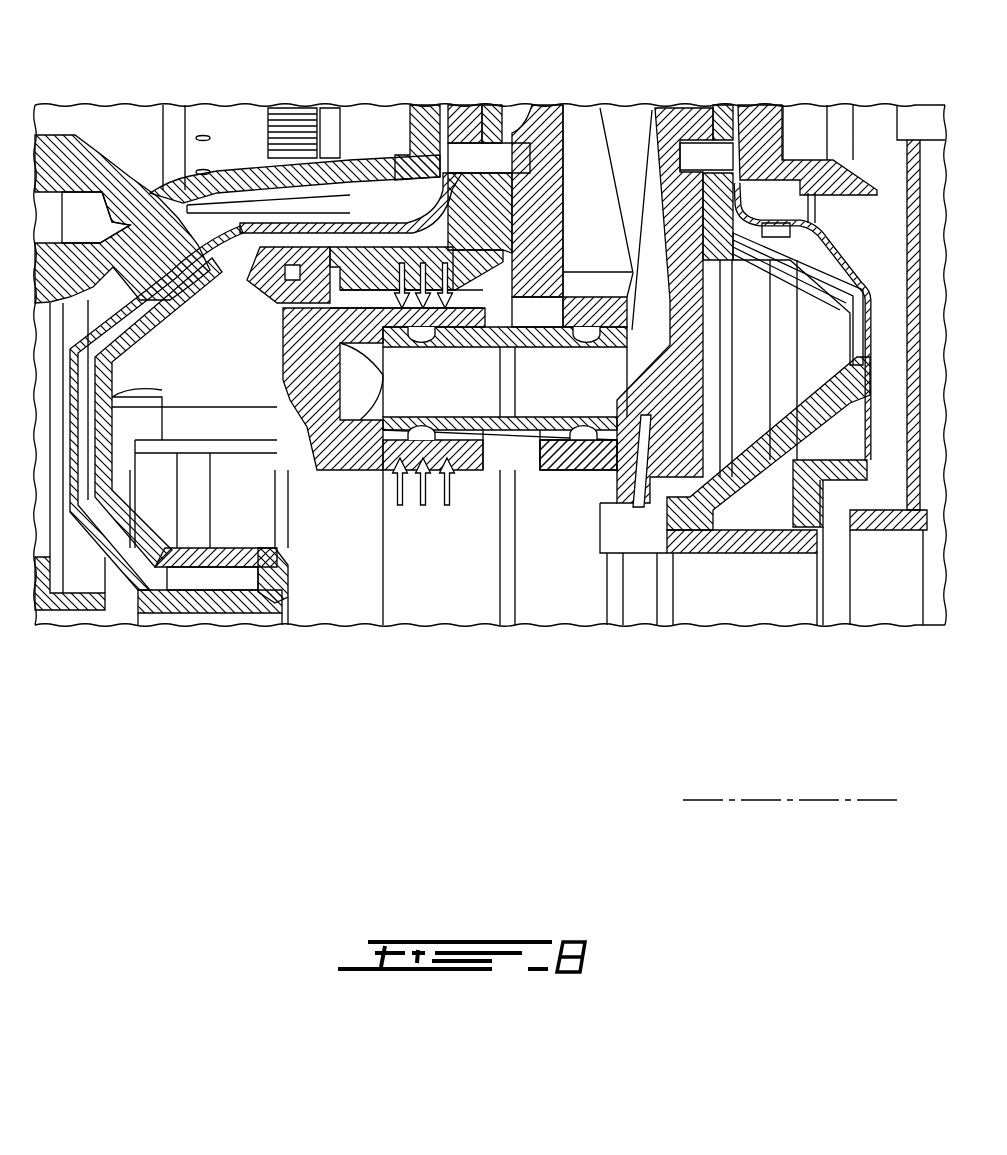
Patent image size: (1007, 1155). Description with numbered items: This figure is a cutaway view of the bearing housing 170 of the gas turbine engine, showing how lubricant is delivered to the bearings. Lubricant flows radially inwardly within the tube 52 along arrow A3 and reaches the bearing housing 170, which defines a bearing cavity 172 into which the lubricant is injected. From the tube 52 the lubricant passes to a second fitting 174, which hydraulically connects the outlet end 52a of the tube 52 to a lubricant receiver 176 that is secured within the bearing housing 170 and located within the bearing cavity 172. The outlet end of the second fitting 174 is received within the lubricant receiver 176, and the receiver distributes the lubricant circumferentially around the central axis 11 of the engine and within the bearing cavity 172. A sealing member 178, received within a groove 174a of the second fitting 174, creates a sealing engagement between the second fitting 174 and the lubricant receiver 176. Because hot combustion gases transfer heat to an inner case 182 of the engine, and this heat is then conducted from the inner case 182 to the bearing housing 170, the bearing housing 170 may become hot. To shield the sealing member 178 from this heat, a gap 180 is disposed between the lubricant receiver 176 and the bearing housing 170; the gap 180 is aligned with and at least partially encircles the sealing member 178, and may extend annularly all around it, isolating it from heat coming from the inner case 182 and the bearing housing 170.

The central axis 11 is at (790, 805).
The tube 52 is at (660, 185).
The outlet end 52a is at (592, 455).
The bearing housing 170 is at (325, 250).
The bearing cavity 172 is at (211, 378).
The second fitting 174 is at (447, 450).
The groove 174a is at (498, 518).
The lubricant receiver 176 is at (352, 470).
The sealing member 178 is at (428, 448).
The gap 180 is at (437, 258).
The inner case 182 is at (260, 183).
The arrow A3 is at (625, 240).